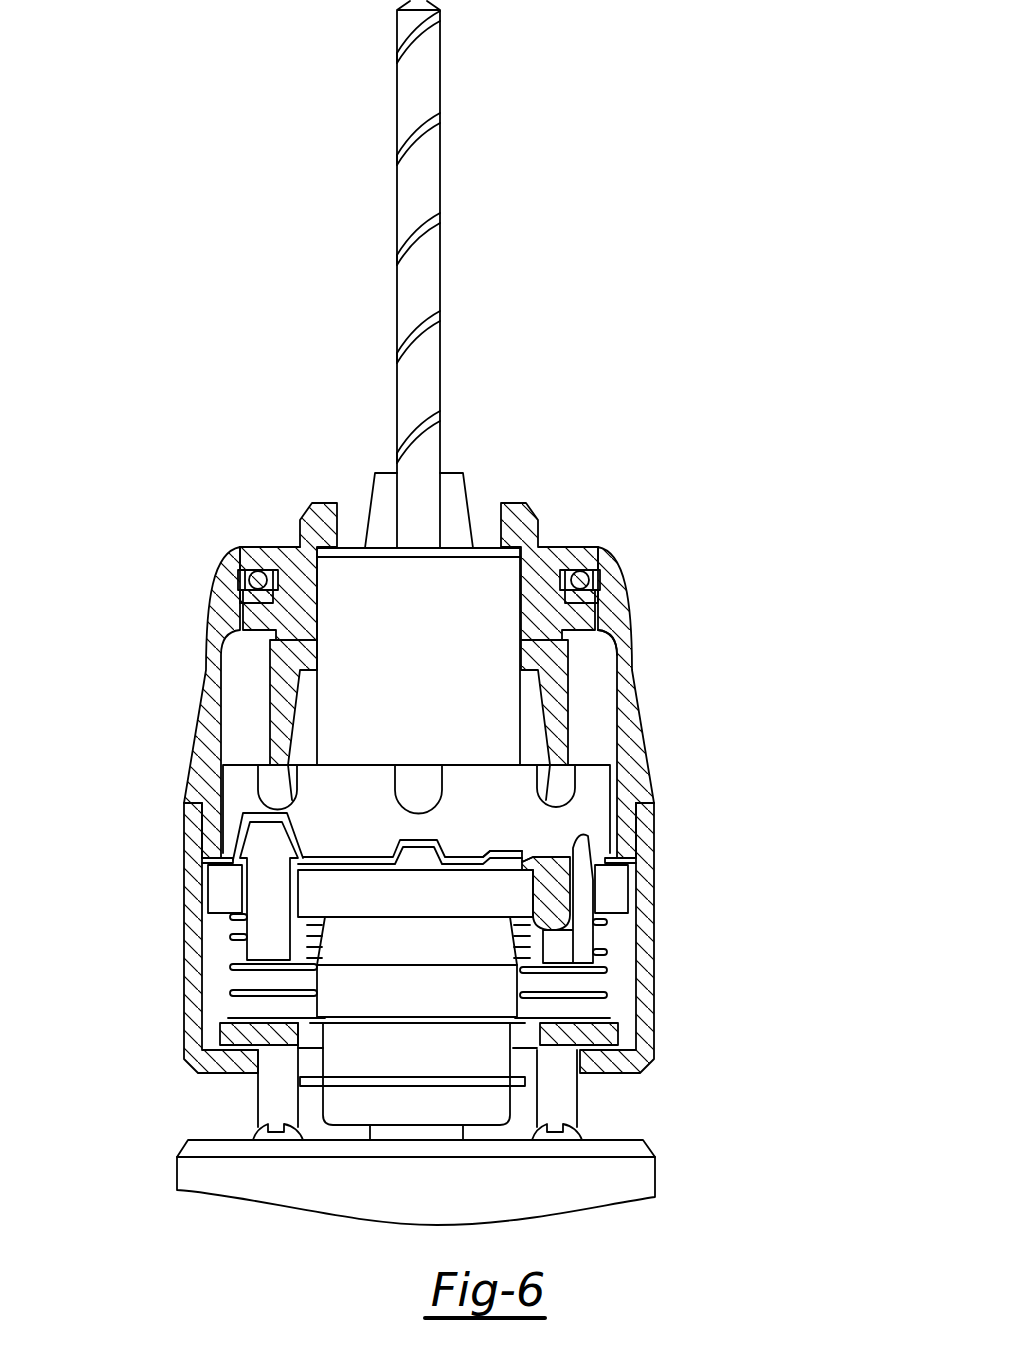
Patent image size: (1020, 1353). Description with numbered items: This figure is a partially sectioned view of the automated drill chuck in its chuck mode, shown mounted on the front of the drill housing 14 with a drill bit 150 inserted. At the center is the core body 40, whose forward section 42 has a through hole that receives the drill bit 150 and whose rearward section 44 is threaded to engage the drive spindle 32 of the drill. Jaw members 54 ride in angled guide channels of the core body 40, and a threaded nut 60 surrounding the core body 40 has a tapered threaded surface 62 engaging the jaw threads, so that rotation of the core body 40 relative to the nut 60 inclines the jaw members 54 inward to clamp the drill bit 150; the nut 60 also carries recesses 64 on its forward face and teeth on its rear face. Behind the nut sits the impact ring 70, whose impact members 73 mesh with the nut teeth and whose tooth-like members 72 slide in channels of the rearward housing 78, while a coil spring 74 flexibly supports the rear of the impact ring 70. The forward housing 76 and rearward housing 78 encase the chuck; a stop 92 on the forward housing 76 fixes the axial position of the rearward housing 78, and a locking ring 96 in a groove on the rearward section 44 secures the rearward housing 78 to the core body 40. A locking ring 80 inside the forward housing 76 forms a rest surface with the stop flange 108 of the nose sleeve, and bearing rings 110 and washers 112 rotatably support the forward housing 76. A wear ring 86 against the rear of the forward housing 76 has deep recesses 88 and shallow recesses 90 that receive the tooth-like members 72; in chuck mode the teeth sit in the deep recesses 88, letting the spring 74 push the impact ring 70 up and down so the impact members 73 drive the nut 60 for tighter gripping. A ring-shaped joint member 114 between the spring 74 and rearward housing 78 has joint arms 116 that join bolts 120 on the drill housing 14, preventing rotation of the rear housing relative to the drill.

The drill housing 14 is at (657, 1185).
The drive spindle 32 is at (370, 1133).
The core body 40 is at (348, 540).
The forward section 42 is at (406, 627).
The rearward section 44 is at (405, 1008).
The jaw members 54 is at (376, 468).
The threaded nut 60 is at (247, 750).
The tapered threaded surface 62 is at (494, 865).
The recesses 64 is at (563, 778).
The impact ring 70 is at (615, 893).
The tooth-like members 72 is at (253, 930).
The impact members 73 is at (533, 870).
The coil spring 74 is at (225, 990).
The forward housing 76 is at (648, 666).
The rearward housing 78 is at (665, 928).
The locking ring 80 is at (590, 621).
The wear ring 86 is at (233, 857).
The deep recesses 88 is at (290, 818).
The shallow recesses 90 is at (433, 842).
The stop 92 is at (656, 822).
The locking ring 96 is at (312, 1081).
The stop flange 108 is at (265, 553).
The bearing rings 110 is at (581, 578).
The washers 112 is at (598, 601).
The joint member 114 is at (628, 1038).
The joint arms 116 is at (560, 1095).
The bolts 120 is at (577, 1138).
The drill bit 150 is at (420, 183).